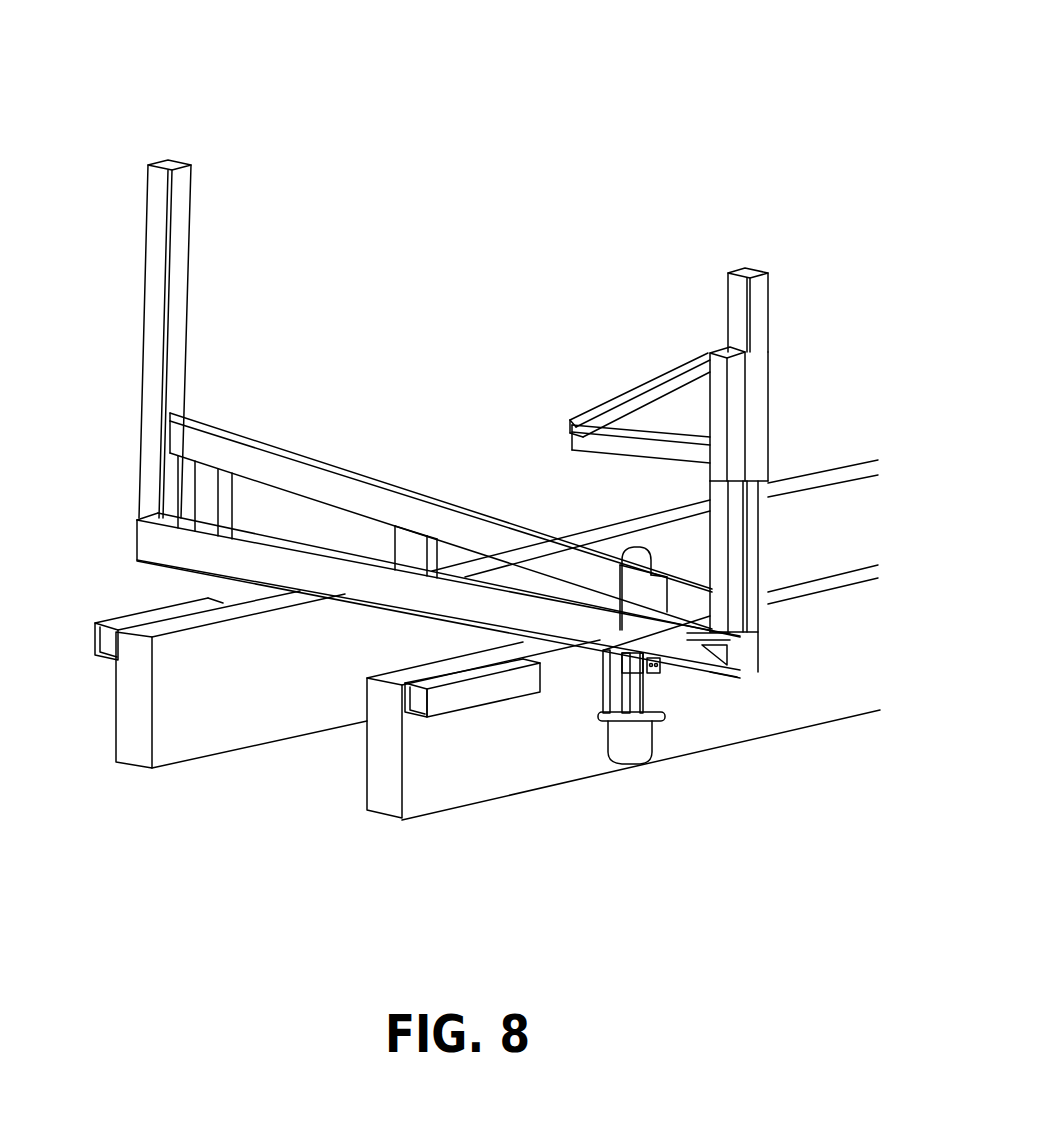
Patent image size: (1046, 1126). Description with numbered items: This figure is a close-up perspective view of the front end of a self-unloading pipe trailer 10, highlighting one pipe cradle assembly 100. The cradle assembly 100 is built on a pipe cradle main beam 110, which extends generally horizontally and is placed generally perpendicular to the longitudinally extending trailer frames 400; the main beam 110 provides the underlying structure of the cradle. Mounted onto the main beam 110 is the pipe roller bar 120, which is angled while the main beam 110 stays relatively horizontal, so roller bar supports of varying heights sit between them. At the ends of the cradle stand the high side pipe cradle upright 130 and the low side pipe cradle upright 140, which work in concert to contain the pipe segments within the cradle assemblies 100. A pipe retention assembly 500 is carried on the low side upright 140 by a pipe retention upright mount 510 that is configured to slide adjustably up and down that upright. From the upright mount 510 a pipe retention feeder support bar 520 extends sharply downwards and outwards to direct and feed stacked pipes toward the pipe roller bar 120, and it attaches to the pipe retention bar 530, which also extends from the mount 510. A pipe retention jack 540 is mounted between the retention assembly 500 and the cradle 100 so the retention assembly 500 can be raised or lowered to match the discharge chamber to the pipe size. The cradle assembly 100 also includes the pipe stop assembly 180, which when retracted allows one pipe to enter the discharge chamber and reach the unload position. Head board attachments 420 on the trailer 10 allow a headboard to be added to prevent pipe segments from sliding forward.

The self-unloading pipe trailer 10 is at (662, 992).
The pipe cradle assembly 100 is at (143, 118).
The pipe cradle main beam 110 is at (355, 585).
The pipe roller bar 120 is at (293, 473).
The high side pipe cradle upright 130 is at (185, 305).
The low side pipe cradle upright 140 is at (772, 270).
The pipe stop assembly 180 is at (653, 795).
The trailer frame 400 is at (124, 792).
The head board attachment 420 is at (134, 614).
The pipe retention assembly 500 is at (621, 305).
The pipe retention upright mount 510 is at (767, 410).
The pipe retention feeder support bar 520 is at (603, 407).
The pipe retention bar 530 is at (570, 437).
The pipe retention jack 540 is at (710, 491).